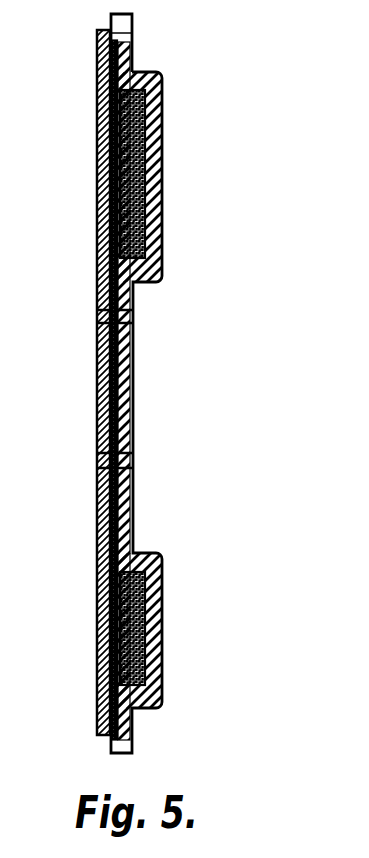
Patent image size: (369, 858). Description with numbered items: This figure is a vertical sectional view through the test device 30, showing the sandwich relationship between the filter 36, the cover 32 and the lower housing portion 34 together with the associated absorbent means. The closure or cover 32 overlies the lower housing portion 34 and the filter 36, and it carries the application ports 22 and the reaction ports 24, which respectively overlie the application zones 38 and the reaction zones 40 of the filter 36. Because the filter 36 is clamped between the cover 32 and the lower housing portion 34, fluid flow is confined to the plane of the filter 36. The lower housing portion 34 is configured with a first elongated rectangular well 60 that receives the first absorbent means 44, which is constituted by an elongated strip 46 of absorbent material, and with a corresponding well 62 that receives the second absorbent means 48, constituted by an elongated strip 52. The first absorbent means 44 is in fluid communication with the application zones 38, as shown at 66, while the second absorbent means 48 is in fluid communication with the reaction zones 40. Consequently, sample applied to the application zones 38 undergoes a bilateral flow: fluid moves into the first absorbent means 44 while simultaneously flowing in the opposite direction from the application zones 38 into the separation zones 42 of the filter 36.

The application ports 22 is at (100, 455).
The reaction ports 24 is at (102, 332).
The test device 30 is at (186, 88).
The cover 32 is at (97, 46).
The lower housing portion 34 is at (132, 52).
The filter 36 is at (133, 360).
The application zones 38 is at (112, 488).
The reaction zones 40 is at (98, 322).
The separation zones 42 is at (128, 404).
The first absorbent means 44 is at (152, 638).
The elongated strip 46 is at (162, 593).
The second absorbent means 48 is at (162, 173).
The elongated strip 52 is at (162, 133).
The first elongated rectangular well 60 is at (162, 673).
The well 62 is at (162, 220).
The fluid communication region 66 is at (120, 592).